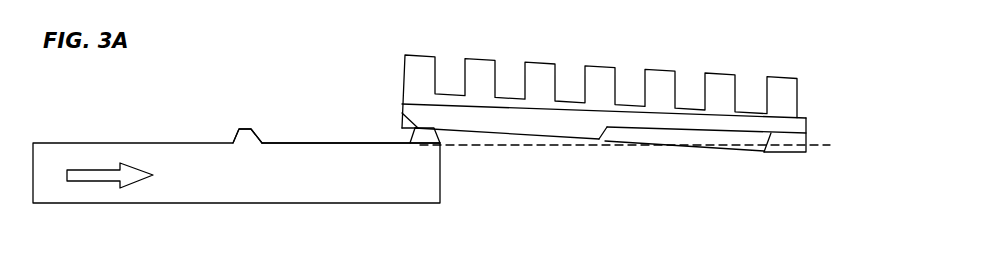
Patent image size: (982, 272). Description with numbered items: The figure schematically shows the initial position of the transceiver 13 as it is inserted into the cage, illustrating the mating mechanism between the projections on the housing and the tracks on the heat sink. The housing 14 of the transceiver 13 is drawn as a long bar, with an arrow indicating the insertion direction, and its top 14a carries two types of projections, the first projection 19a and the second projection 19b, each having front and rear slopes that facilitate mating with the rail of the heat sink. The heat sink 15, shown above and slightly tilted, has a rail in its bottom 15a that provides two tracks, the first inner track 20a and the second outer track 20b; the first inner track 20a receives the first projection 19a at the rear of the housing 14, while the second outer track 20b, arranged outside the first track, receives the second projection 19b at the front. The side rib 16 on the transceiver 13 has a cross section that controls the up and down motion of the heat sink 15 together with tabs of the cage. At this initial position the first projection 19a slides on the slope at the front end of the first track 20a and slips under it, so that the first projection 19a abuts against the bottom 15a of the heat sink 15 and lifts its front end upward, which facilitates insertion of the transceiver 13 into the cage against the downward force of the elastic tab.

The transceiver 13 is at (93, 208).
The housing 14 is at (225, 188).
The top of the housing 14a is at (300, 142).
The heat sink 15 is at (662, 75).
The bottom of the heat sink 15a is at (600, 141).
The side rib 16 is at (768, 127).
The first projection 19a is at (434, 130).
The second projection 19b is at (238, 132).
The first inner track 20a is at (697, 140).
The second outer track 20b is at (523, 126).